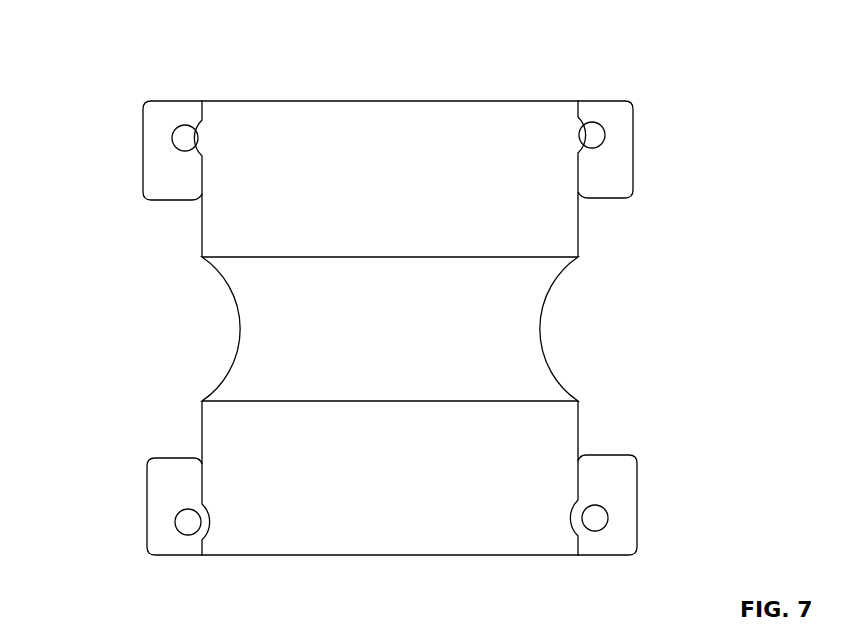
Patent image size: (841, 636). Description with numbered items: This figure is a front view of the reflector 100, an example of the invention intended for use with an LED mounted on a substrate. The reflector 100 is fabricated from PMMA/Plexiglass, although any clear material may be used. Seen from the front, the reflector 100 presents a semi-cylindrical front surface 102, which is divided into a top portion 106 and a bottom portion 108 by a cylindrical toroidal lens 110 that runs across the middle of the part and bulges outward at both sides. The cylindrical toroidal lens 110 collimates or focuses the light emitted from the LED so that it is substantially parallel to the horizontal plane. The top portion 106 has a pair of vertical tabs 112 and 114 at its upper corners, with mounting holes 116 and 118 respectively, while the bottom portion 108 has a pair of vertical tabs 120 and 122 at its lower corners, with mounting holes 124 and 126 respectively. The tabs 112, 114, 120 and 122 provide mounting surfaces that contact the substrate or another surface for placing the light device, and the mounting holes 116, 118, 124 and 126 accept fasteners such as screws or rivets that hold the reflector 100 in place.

The reflector 100 is at (98, 58).
The semi-cylindrical front surface 102 is at (492, 112).
The top portion 106 is at (300, 112).
The bottom portion 108 is at (405, 537).
The cylindrical toroidal lens 110 is at (616, 325).
The vertical tab 112 is at (182, 100).
The vertical tab 114 is at (605, 100).
The mounting hole 116 is at (172, 138).
The mounting hole 118 is at (605, 135).
The vertical tab 120 is at (180, 558).
The vertical tab 122 is at (603, 558).
The mounting hole 124 is at (175, 522).
The mounting hole 126 is at (608, 518).